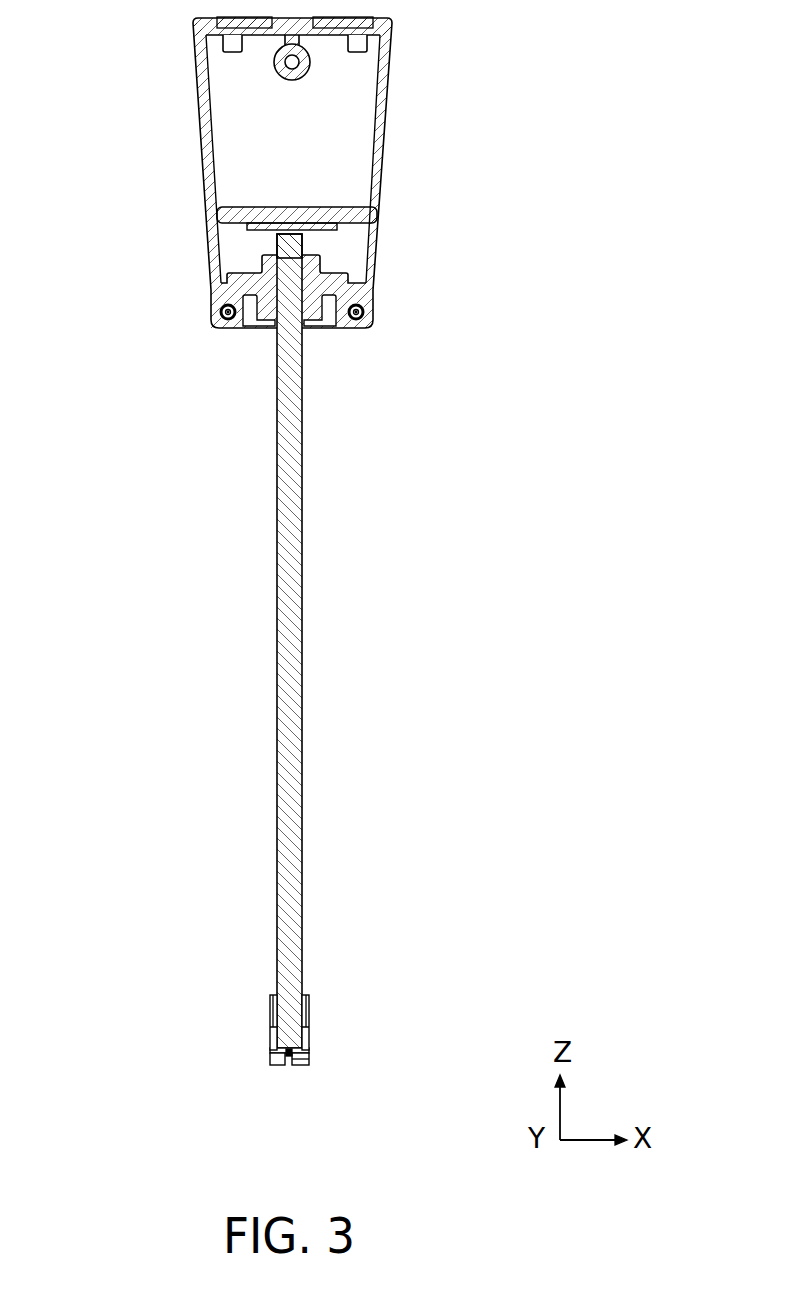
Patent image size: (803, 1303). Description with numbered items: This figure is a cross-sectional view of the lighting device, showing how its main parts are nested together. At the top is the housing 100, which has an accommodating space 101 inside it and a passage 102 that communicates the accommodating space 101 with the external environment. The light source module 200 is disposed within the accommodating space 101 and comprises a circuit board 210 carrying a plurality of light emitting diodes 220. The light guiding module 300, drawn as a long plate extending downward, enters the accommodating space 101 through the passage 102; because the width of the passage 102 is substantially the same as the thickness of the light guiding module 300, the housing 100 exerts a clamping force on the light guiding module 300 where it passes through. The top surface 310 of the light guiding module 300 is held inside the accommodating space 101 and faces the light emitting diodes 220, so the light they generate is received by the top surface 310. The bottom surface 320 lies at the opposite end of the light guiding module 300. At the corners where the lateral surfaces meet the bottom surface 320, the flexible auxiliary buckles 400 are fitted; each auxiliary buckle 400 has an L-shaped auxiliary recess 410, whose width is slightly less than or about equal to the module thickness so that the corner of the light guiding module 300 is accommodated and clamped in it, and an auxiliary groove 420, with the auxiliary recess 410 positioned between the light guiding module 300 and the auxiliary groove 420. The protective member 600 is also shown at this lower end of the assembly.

The housing 100 is at (394, 24).
The accommodating space 101 is at (340, 248).
The passage 102 is at (302, 288).
The light source module 200 is at (186, 238).
The circuit board 210 is at (265, 227).
The light emitting diodes 220 is at (292, 235).
The light guiding module 300 is at (288, 669).
The top surface 310 is at (300, 228).
The bottom surface 320 is at (303, 1053).
The auxiliary buckle 400 is at (283, 1064).
The auxiliary recess 410 is at (277, 1040).
The auxiliary groove 420 is at (308, 1058).
The protective member 600 is at (288, 1058).